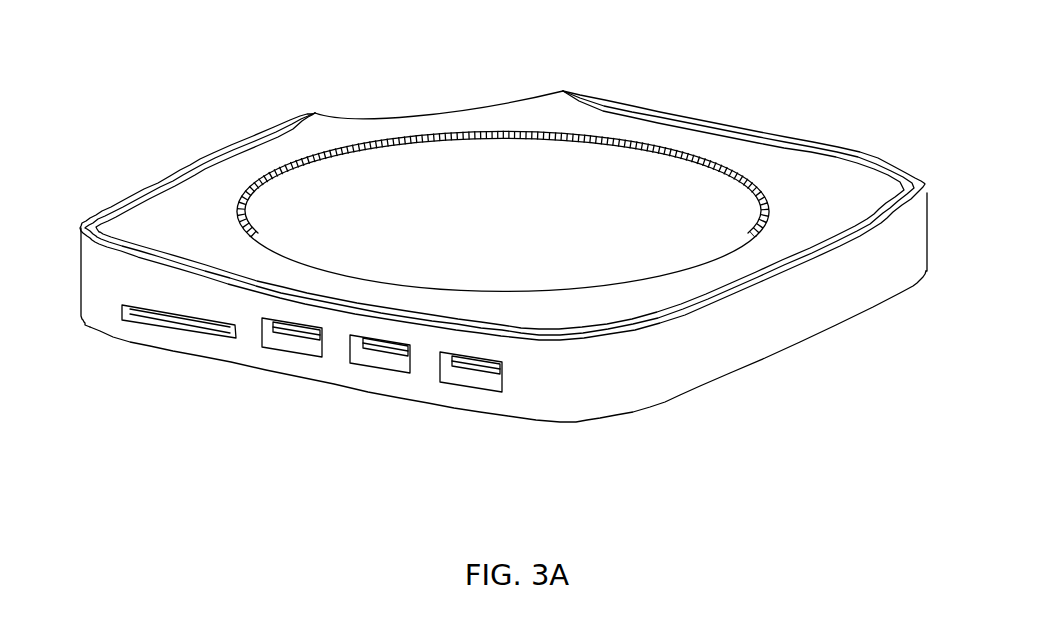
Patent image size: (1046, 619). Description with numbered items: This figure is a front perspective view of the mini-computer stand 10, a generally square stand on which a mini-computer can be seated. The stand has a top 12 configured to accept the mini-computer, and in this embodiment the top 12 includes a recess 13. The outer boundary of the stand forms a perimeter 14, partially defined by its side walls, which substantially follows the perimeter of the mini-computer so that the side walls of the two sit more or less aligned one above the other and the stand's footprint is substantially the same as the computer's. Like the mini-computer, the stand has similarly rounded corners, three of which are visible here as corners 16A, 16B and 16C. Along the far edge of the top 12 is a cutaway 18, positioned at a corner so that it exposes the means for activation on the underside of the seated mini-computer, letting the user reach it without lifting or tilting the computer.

The mini-computer stand 10 is at (163, 76).
The top 12 is at (170, 237).
The recess 13 is at (493, 227).
The perimeter 14 is at (822, 284).
The rounded corner 16A is at (928, 219).
The rounded corner 16B is at (580, 388).
The rounded corner 16C is at (82, 268).
The cutaway 18 is at (389, 102).